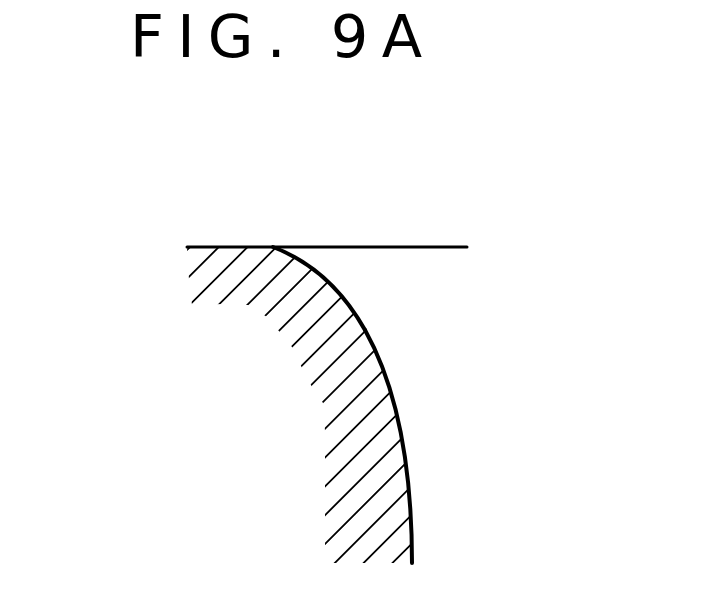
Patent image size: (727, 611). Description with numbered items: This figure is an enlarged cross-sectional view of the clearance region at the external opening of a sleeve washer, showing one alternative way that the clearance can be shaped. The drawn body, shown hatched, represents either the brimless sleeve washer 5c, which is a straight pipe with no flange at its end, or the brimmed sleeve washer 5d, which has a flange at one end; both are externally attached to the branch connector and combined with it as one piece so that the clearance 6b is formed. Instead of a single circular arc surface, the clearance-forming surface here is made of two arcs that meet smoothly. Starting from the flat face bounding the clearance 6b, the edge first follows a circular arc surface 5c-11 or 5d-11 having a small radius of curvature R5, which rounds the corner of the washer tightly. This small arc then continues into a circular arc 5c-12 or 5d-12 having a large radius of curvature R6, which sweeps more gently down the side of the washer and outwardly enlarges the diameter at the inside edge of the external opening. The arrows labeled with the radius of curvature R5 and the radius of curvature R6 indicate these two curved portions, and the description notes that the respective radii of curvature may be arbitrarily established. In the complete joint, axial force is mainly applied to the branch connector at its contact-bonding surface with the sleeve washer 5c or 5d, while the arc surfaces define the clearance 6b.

The brimless sleeve washer 5c is at (363, 400).
The brimmed sleeve washer 5d is at (230, 280).
The circular arc surface 5c-11 is at (261, 271).
The circular arc surface 5d-11 is at (310, 267).
The circular arc 5c-12 is at (420, 415).
The circular arc 5d-12 is at (377, 354).
The clearance 6b is at (333, 258).
The small radius of curvature R5 is at (261, 271).
The large radius of curvature R6 is at (420, 415).